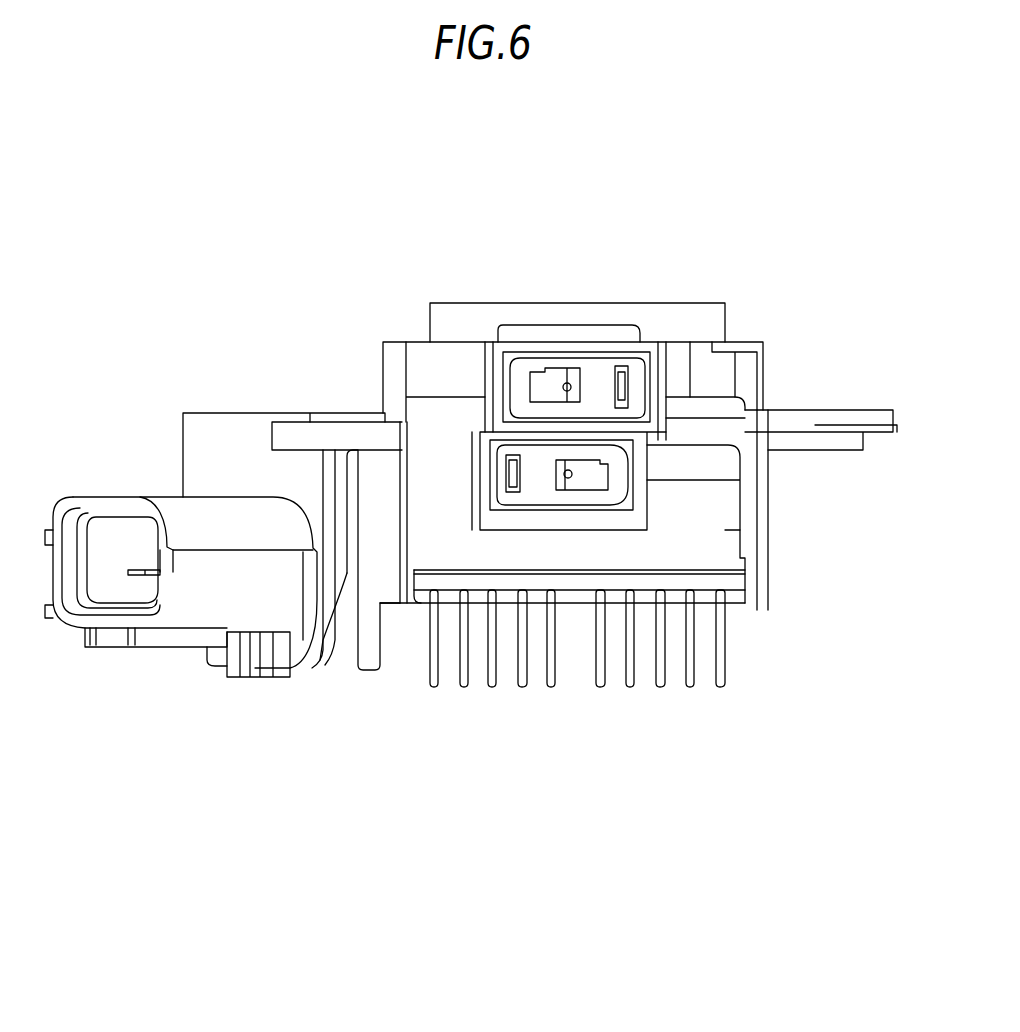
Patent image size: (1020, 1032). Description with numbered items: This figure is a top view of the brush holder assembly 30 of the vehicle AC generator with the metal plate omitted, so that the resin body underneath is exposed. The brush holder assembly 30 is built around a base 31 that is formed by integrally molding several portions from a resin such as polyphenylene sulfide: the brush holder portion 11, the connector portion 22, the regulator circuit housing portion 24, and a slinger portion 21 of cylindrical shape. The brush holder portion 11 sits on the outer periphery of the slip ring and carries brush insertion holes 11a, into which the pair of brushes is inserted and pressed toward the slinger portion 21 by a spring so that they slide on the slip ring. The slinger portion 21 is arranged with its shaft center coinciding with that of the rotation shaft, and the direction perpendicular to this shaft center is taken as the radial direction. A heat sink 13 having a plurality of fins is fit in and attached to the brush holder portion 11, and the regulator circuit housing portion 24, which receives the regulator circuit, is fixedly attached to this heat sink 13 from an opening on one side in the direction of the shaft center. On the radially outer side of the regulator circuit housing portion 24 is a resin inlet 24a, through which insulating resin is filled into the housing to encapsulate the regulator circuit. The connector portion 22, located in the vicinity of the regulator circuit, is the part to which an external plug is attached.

The brush holder portion 11 is at (567, 342).
The brush insertion holes 11a is at (630, 498).
The heat sink 13 is at (602, 685).
The slinger portion 21 is at (698, 322).
The connector portion 22 is at (200, 610).
The regulator circuit housing portion 24 is at (771, 524).
The resin inlet 24a is at (723, 490).
The brush holder assembly 30 is at (471, 543).
The base 31 is at (753, 508).